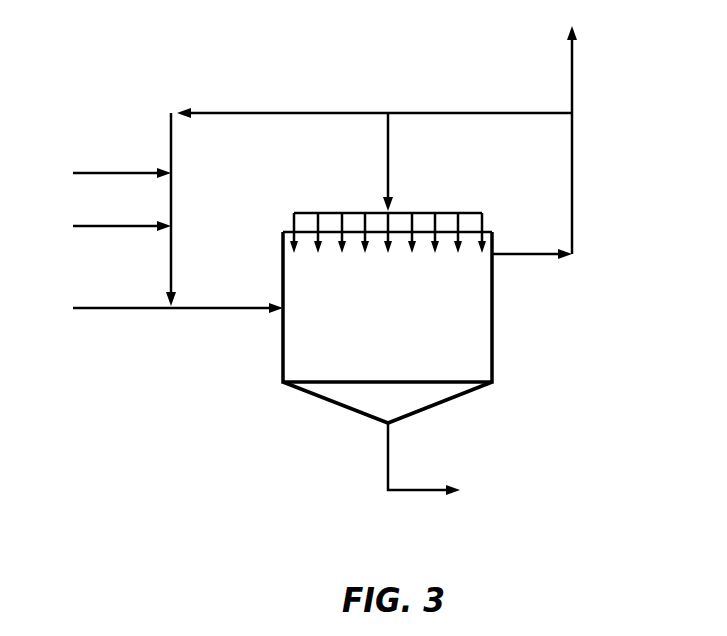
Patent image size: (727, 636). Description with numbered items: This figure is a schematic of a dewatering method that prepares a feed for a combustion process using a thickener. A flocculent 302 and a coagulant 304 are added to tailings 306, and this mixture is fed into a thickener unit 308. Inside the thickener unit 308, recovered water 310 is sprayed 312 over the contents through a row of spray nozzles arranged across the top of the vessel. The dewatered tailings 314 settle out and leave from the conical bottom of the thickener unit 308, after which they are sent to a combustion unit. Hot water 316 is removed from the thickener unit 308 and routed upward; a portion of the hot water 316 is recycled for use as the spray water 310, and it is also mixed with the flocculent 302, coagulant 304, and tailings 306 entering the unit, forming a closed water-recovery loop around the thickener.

The flocculent 302 is at (98, 175).
The coagulant 304 is at (98, 228).
The tailings 306 is at (154, 310).
The thickener unit 308 is at (493, 339).
The recovered water 310 is at (388, 158).
The spray 312 is at (390, 240).
The dewatered tailings 314 is at (449, 462).
The hot water 316 is at (573, 185).